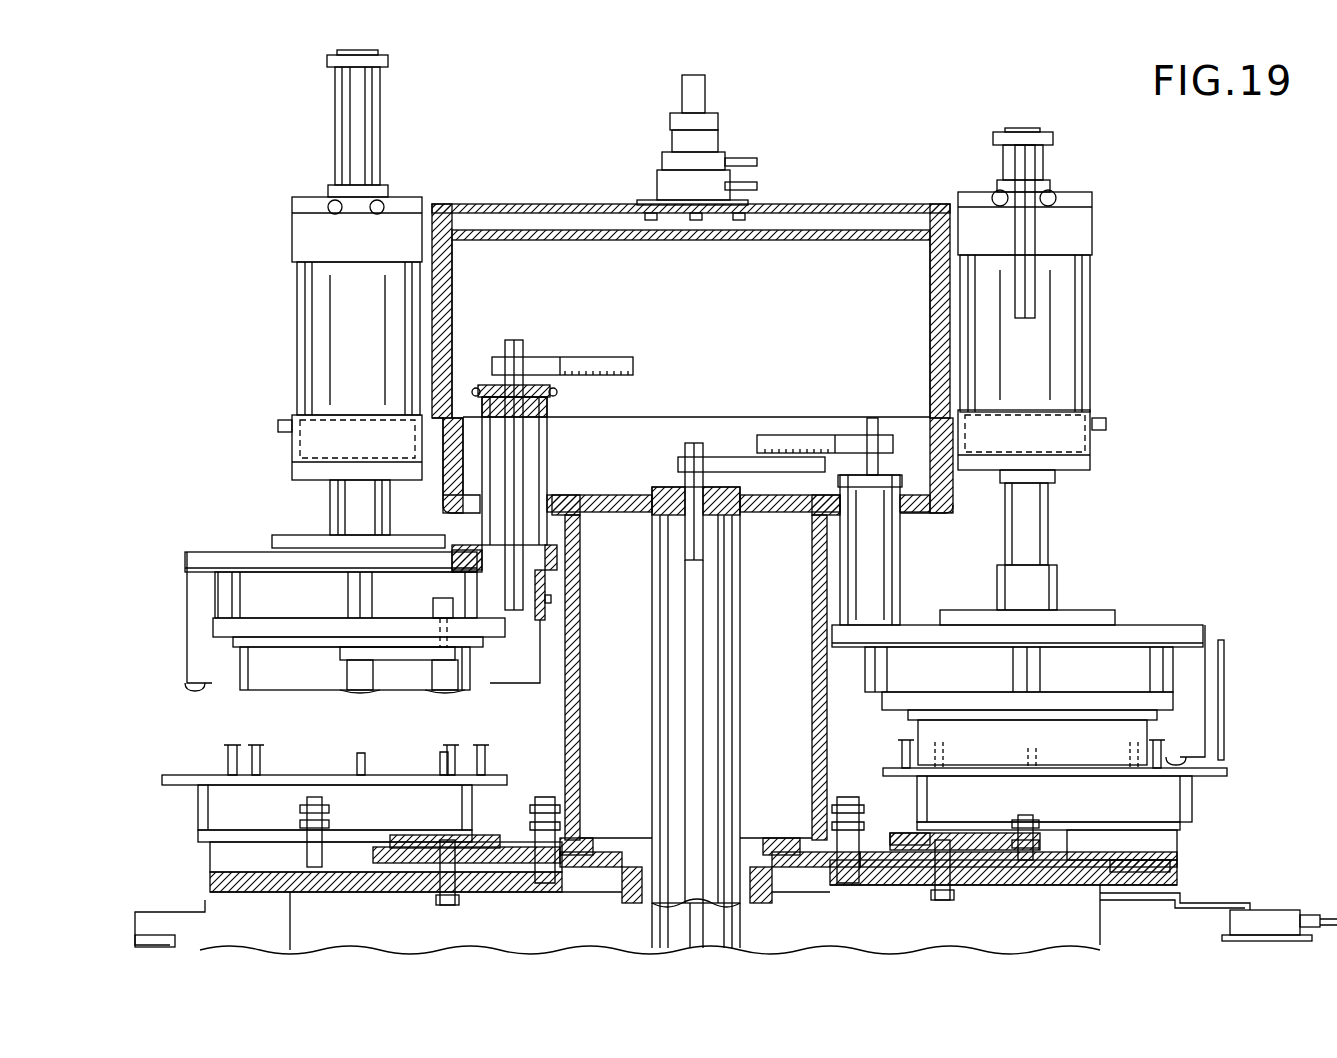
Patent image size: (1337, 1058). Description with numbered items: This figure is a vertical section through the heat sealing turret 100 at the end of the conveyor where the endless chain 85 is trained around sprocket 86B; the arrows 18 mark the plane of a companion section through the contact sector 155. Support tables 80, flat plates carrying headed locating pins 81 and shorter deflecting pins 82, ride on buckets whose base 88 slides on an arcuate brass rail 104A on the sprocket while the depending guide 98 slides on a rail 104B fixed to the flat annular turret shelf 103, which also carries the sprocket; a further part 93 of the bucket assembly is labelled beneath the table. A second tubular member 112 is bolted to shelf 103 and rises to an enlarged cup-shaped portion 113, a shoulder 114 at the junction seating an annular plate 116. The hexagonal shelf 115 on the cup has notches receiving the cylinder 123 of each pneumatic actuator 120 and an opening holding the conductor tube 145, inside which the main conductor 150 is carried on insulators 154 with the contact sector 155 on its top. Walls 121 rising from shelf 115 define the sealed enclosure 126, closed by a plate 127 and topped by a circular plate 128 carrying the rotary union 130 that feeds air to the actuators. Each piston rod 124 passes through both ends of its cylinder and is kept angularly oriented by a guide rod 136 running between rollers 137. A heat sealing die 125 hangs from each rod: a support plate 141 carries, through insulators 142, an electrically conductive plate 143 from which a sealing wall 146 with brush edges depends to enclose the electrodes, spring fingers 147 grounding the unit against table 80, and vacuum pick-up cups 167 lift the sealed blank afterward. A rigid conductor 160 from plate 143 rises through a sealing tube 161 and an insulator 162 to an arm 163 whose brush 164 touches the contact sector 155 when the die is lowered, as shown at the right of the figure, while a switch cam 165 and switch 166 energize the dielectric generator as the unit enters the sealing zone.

The section line 18- 18 is at (684, 330).
The support table 80 is at (175, 775).
The locating pins 81 is at (245, 728).
The deflecting pins 82 is at (375, 742).
The endless chain 85 is at (335, 875).
The sprocket 86B is at (470, 880).
The base of bucket 88 is at (1177, 840).
The plate 93 is at (1185, 808).
The depending support leg or guide 98 is at (1170, 855).
The heat sealing turret 100 is at (852, 165).
The turret shelf 103 is at (892, 885).
The arcuate brass rail 104A is at (898, 833).
The arcuate brass rail 104B is at (1170, 866).
The second tubular member 112 is at (812, 690).
The cup-shaped portion 113 is at (935, 505).
The shoulder 114 is at (808, 520).
The hexagonal flange or shelf 115 is at (880, 435).
The annular plate 116 is at (612, 500).
The pneumatic actuator 120 is at (673, 337).
The wall 121 is at (930, 285).
The cylinder 123 is at (320, 285).
The piston rod 124 is at (340, 510).
The heat sealing die 125 is at (690, 642).
The sealed enclosure 126 is at (615, 285).
The plate 127 is at (835, 240).
The circular plate 128 is at (615, 204).
The rotary union 130 is at (733, 135).
The guide rod 136 is at (1092, 222).
The rollers 137 is at (1008, 196).
The support plate 141 is at (185, 558).
The insulators 142 is at (350, 600).
The electrically conductive plate 143 is at (230, 627).
The conductor tube 145 is at (660, 678).
The sealing wall 146 is at (475, 672).
The spring fingers 147 is at (548, 630).
The main conductor 150 is at (690, 540).
The insulators 154 is at (665, 490).
The contact sector 155 is at (765, 470).
The conductor 160 is at (520, 470).
The sealing tube 161 is at (548, 440).
The insulator 162 is at (500, 385).
The arm 163 is at (535, 357).
The brush 164 is at (630, 357).
The switch cam 165 is at (1175, 905).
The switch 166 is at (1275, 912).
The vacuum pick-up cups 167 is at (355, 672).